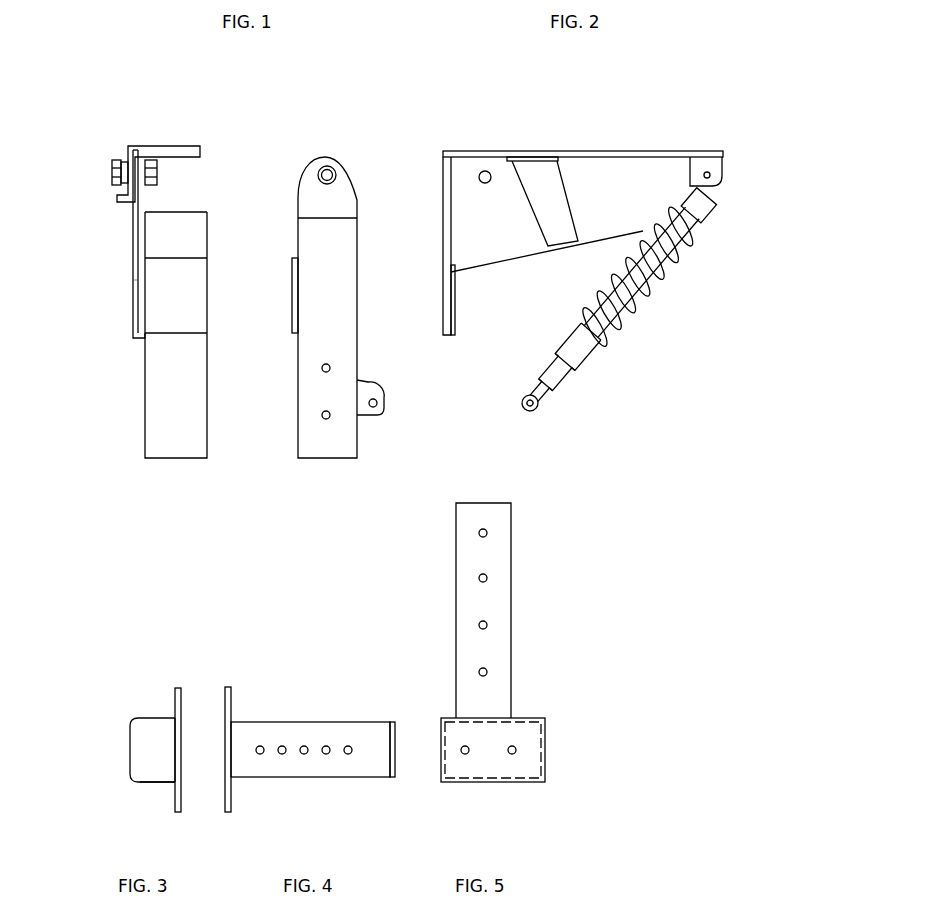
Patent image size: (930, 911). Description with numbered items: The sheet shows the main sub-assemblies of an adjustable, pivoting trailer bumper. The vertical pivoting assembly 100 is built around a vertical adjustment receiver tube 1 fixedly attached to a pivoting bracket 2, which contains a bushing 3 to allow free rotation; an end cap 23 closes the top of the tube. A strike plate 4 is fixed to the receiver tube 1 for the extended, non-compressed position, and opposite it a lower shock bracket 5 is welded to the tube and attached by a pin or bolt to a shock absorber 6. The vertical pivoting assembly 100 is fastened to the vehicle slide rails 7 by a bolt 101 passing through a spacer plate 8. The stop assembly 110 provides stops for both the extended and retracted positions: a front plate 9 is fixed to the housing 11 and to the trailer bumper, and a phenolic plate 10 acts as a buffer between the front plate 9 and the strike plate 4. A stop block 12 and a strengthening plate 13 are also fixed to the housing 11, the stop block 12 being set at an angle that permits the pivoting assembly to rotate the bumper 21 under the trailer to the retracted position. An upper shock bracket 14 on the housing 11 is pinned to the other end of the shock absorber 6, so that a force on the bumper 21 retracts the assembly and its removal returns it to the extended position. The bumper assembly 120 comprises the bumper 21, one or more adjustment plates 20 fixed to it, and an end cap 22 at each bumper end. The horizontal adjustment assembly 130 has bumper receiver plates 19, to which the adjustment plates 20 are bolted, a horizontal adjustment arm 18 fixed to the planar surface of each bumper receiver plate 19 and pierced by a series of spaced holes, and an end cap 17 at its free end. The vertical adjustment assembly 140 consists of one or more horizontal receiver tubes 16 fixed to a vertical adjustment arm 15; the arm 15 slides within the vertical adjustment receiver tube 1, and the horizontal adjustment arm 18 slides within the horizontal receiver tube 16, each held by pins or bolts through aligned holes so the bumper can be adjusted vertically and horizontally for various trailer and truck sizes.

In FIG. 1, the vertical adjustment receiver tube 1 is at (129, 335).
In FIG. 1, the pivoting bracket 2 is at (85, 253).
In FIG. 1, the bushing 3 is at (282, 197).
In FIG. 1, the strike plate 4 is at (193, 303).
In FIG. 1, the lower shock bracket 5 is at (399, 426).
In FIG. 2, the shock absorber 6 is at (653, 307).
In FIG. 1, the slide rails 7 is at (141, 143).
In FIG. 1, the spacer plate 8 is at (98, 154).
In FIG. 2, the front plate 9 is at (510, 246).
In FIG. 2, the phenolic plate 10 is at (496, 300).
In FIG. 1, the housing 11 is at (87, 244).
In FIG. 2, the housing 11 is at (627, 112).
In FIG. 2, the stop block 12 is at (594, 187).
In FIG. 2, the strengthening plate 13 is at (508, 129).
In FIG. 2, the upper shock bracket 14 is at (752, 205).
In FIG. 5, the vertical adjustment arm 15 is at (550, 610).
In FIG. 5, the horizontal receiver tube 16 is at (531, 775).
In FIG. 4, the end cap 17 is at (436, 771).
In FIG. 4, the horizontal adjustment arm 18 is at (310, 722).
In FIG. 4, the bumper receiver plate 19 is at (277, 726).
In FIG. 3, the adjustment plate 20 is at (125, 720).
In FIG. 3, the bumper 21 is at (101, 750).
In FIG. 3, the end cap 22 is at (122, 782).
In FIG. 1, the end cap 23 is at (212, 181).
In FIG. 1, the vertical pivoting assembly 100 is at (335, 105).
In FIG. 1, the bolt 101 is at (110, 177).
In FIG. 2, the stop assembly 110 is at (828, 145).
In FIG. 3, the bumper assembly 120 is at (75, 712).
In FIG. 4, the horizontal adjustment assembly 130 is at (322, 820).
In FIG. 5, the vertical adjustment assembly 140 is at (605, 675).